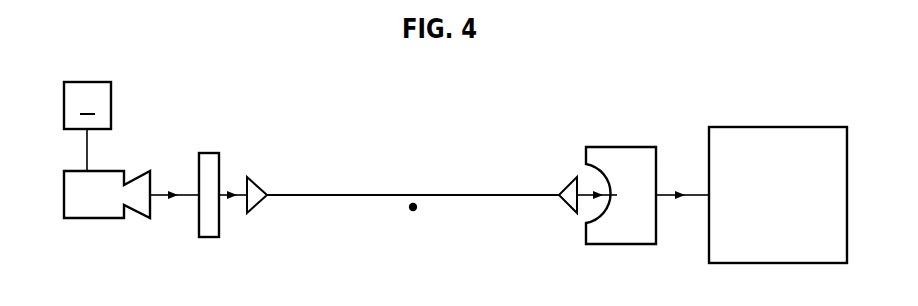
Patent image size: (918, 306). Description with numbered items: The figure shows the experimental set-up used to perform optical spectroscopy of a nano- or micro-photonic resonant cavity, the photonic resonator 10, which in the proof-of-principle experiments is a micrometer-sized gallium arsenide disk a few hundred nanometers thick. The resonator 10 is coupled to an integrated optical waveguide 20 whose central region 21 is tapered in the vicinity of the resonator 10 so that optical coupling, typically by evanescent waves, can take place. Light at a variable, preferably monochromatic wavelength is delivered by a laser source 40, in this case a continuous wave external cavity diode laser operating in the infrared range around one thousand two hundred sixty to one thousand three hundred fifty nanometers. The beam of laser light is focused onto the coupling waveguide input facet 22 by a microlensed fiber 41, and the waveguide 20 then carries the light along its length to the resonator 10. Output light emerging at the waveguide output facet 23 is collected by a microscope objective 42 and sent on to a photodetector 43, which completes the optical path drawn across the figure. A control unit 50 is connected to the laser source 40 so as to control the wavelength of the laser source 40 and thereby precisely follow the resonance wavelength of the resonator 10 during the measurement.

The photonic resonator 10 is at (412, 212).
The integrated optical waveguide 20 is at (323, 195).
The central region 21 is at (412, 195).
The coupling waveguide input facet 22 is at (254, 197).
The waveguide output facet 23 is at (569, 203).
The laser source 40 is at (98, 204).
The microlensed fiber 41 is at (209, 227).
The microscope objective 42 is at (630, 164).
The photodetector 43 is at (778, 143).
The control unit 50 is at (108, 101).